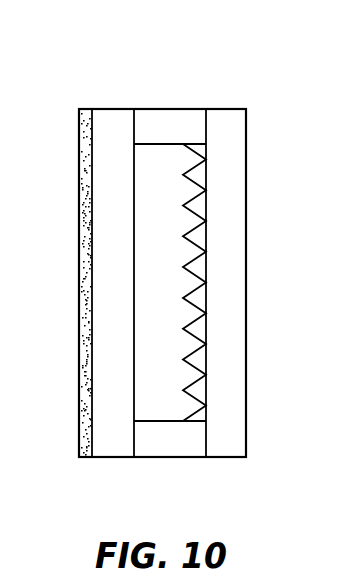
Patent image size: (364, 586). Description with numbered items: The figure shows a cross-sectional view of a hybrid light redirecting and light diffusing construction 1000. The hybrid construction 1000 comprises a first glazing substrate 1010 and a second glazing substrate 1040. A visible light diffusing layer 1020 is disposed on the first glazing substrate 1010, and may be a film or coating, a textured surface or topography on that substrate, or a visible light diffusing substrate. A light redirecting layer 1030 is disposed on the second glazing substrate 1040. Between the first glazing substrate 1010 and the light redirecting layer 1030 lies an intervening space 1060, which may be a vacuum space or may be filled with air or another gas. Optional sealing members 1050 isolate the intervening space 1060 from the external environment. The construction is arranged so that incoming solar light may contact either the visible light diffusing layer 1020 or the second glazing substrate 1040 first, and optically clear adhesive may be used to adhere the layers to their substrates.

The hybrid construction 1000 is at (97, 72).
The first glazing substrate 1010 is at (115, 335).
The visible light diffusing layer 1020 is at (88, 243).
The light redirecting layer 1030 is at (195, 300).
The second glazing substrate 1040 is at (232, 217).
The sealing members 1050 is at (167, 117).
The intervening space 1060 is at (163, 408).